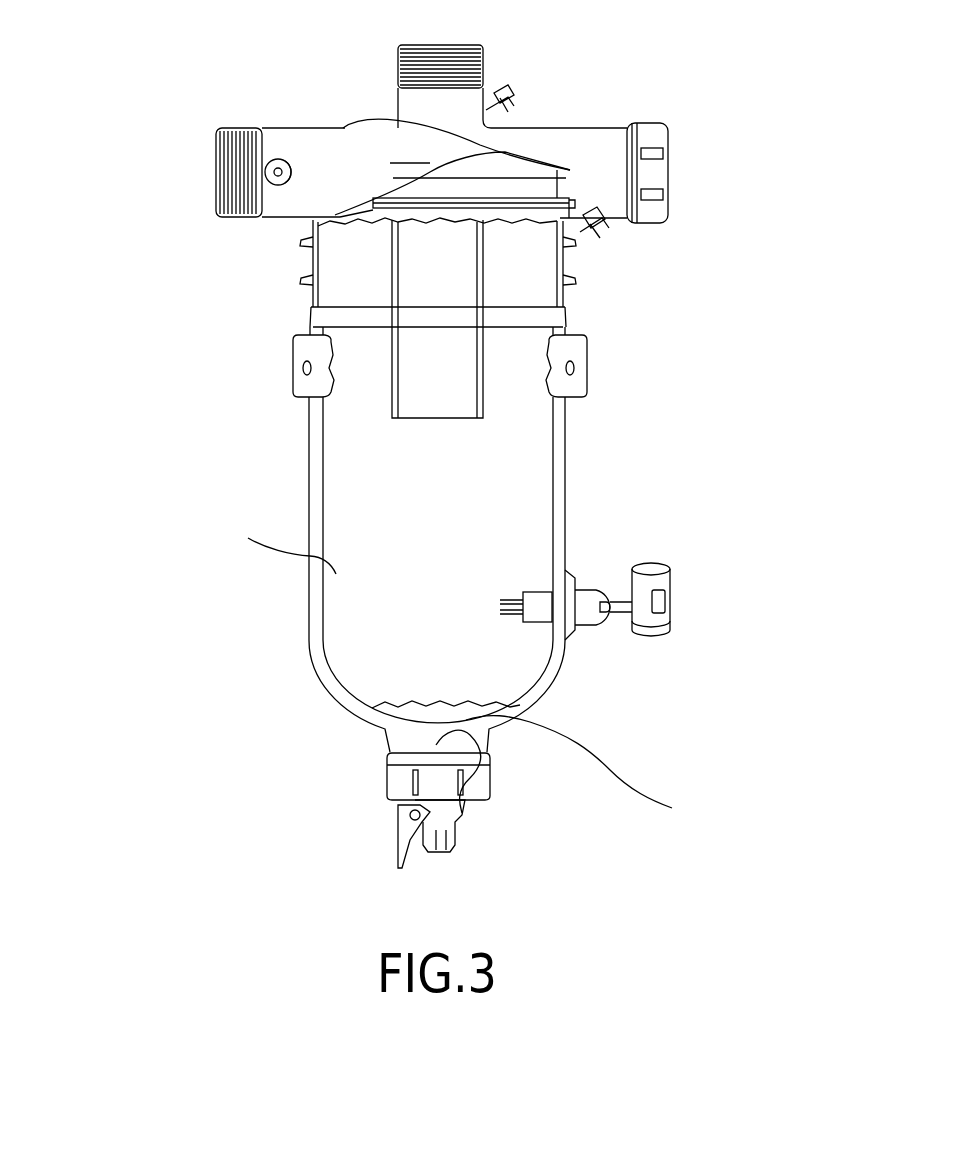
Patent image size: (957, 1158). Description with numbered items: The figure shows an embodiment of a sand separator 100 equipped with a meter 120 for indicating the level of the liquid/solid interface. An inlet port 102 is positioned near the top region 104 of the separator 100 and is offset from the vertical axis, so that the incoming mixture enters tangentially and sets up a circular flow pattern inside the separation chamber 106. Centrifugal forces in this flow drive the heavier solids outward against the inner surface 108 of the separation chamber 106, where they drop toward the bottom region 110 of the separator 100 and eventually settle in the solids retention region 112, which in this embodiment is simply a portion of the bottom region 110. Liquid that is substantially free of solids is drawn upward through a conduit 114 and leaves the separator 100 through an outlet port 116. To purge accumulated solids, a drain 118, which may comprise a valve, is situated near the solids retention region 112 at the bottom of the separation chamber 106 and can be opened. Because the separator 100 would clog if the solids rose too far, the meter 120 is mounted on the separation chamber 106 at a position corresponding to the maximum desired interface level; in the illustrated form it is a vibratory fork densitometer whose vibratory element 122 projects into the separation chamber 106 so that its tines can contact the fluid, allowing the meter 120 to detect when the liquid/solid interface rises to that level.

The separator 100 is at (148, 286).
The inlet port 102 is at (220, 128).
The top region 104 is at (716, 178).
The separation chamber 106 is at (567, 412).
The inner surface 108 is at (555, 455).
The bottom region 110 is at (670, 681).
The solids retention region 112 is at (377, 703).
The conduit 114 is at (460, 308).
The outlet port 116 is at (398, 48).
The drain 118 is at (450, 805).
The meter 120 is at (694, 578).
The vibratory element 122 is at (502, 598).